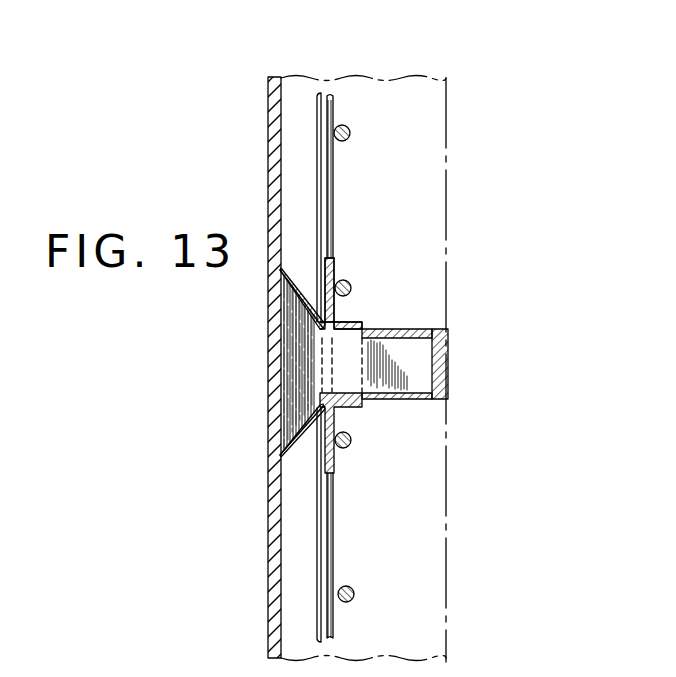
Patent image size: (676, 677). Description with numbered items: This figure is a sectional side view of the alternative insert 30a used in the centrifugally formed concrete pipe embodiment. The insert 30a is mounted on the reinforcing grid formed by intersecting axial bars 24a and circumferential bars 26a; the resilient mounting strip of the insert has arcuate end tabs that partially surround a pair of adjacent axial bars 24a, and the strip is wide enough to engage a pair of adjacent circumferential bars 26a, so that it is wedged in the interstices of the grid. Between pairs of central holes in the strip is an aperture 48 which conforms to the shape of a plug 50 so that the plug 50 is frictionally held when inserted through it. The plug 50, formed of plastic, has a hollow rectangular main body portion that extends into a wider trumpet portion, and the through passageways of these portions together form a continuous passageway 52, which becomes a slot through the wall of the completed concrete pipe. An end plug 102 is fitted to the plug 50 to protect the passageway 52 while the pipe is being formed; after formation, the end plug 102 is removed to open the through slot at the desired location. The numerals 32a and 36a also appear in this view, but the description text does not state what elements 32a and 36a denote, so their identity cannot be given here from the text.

The wall panel 32a is at (268, 620).
The wall 36a is at (268, 116).
The axial bar 24a is at (333, 100).
The circumferential bar 26a is at (350, 139).
The insert 30a is at (336, 457).
The aperture 48 is at (349, 366).
The end plug 102 is at (448, 365).
The through continuous passageway 52 is at (303, 372).
The plug 50 is at (303, 407).